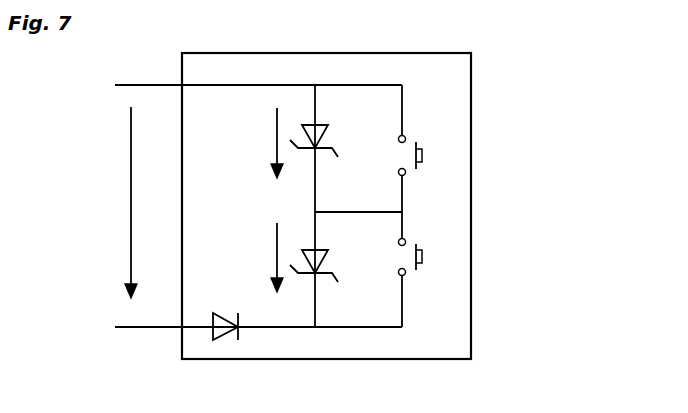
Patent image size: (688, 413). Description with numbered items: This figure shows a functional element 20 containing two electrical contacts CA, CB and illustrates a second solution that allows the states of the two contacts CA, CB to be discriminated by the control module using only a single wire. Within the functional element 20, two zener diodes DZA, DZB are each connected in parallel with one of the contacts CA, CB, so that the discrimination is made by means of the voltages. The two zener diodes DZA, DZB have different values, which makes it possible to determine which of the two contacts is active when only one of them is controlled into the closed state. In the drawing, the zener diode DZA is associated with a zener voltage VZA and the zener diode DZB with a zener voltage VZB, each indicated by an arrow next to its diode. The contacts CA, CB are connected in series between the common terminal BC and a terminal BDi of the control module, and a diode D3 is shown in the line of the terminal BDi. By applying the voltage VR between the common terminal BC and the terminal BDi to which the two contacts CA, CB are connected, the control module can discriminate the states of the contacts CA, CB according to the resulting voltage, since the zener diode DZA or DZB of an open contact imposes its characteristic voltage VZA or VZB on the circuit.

The functional element 20 is at (471, 120).
The common terminal BC is at (243, 85).
The terminal BDi is at (239, 327).
The zener diode DZA is at (326, 141).
The zener diode DZB is at (326, 266).
The Zener voltage A VZA is at (260, 143).
The Zener voltage B VZB is at (260, 257).
The voltage VR is at (117, 202).
The electrical contact CA is at (424, 156).
The electrical contact CB is at (424, 257).
The diode D3 is at (225, 318).